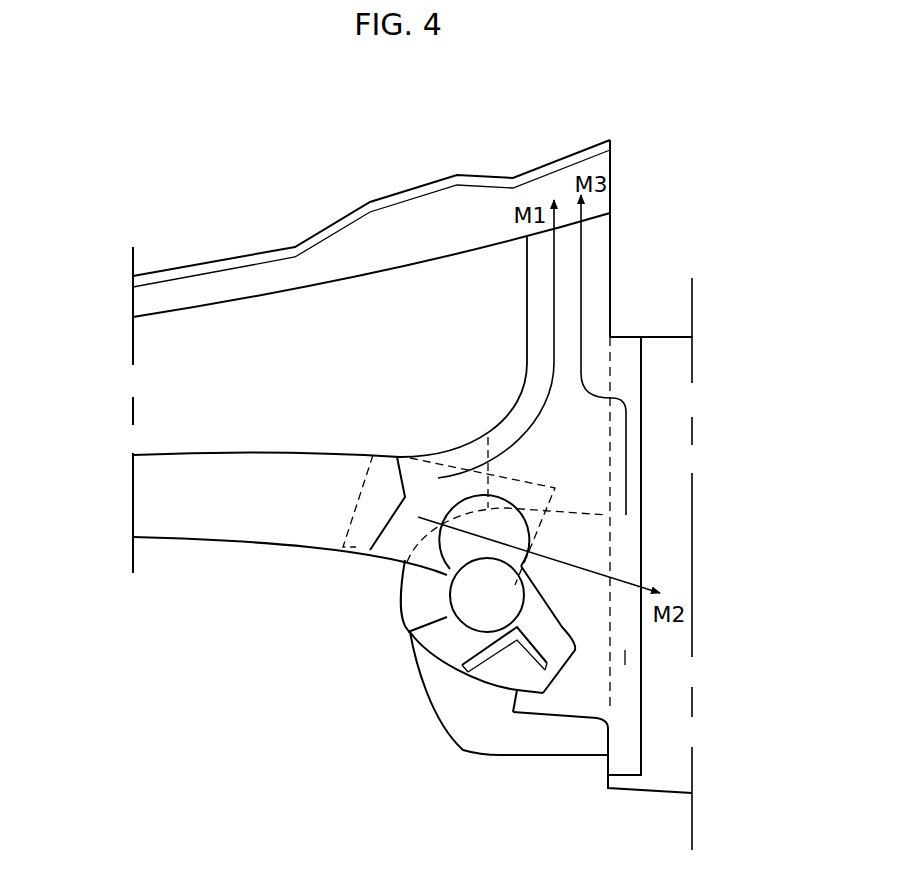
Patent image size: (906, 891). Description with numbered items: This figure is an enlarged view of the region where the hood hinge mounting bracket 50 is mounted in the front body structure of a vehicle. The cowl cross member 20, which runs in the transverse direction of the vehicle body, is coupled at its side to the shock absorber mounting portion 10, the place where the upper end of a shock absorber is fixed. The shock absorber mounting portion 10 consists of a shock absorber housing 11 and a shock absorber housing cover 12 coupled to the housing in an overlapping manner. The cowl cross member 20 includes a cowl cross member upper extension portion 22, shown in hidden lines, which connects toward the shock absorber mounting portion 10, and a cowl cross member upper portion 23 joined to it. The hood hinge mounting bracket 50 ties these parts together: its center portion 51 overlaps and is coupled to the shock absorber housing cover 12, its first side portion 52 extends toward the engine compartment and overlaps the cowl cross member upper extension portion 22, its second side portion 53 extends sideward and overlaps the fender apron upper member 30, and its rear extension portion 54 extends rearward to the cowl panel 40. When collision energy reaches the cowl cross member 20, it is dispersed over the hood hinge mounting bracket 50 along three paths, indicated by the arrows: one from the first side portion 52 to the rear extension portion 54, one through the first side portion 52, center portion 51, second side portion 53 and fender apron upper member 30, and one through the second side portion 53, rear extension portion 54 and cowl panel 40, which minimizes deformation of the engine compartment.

The shock absorber mounting portion 10 is at (504, 679).
The shock absorber housing 11 is at (468, 720).
The shock absorber housing cover 12 is at (522, 662).
The cowl cross member 20 is at (244, 549).
The cowl cross member upper extension portion 22 is at (358, 495).
The cowl cross member upper portion 23 is at (162, 512).
The fender apron upper member 30 is at (675, 570).
The cowl panel 40 is at (162, 382).
The hood hinge mounting bracket 50 is at (647, 405).
The center portion 51 is at (571, 528).
The first side portion 52 is at (399, 532).
The second side portion 53 is at (625, 657).
The rear extension portion 54 is at (542, 307).